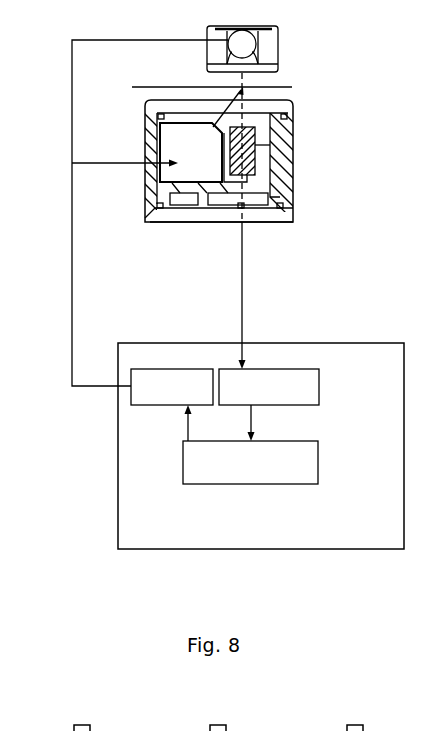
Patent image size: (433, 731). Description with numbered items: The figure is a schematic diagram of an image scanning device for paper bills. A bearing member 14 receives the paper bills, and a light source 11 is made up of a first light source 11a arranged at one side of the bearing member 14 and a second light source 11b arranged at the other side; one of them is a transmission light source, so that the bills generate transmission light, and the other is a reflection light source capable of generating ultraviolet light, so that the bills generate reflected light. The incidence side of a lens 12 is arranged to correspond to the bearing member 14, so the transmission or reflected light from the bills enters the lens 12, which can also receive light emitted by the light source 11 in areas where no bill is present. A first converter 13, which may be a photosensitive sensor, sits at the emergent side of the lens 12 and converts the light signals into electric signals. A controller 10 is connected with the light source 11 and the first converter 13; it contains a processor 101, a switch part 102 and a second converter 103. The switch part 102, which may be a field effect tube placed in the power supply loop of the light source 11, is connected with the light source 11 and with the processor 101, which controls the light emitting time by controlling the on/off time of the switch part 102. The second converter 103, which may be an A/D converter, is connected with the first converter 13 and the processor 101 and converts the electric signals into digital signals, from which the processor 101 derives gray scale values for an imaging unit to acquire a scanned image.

The controller 10 is at (261, 446).
The light source 11 is at (220, 97).
The first light source 11a is at (178, 143).
The second light source 11b is at (258, 40).
The lens 12 is at (248, 138).
The first converter 13 is at (243, 207).
The bearing member 14 is at (262, 85).
The processor 101 is at (183, 465).
The switch part 102 is at (135, 404).
The second converter 103 is at (272, 370).